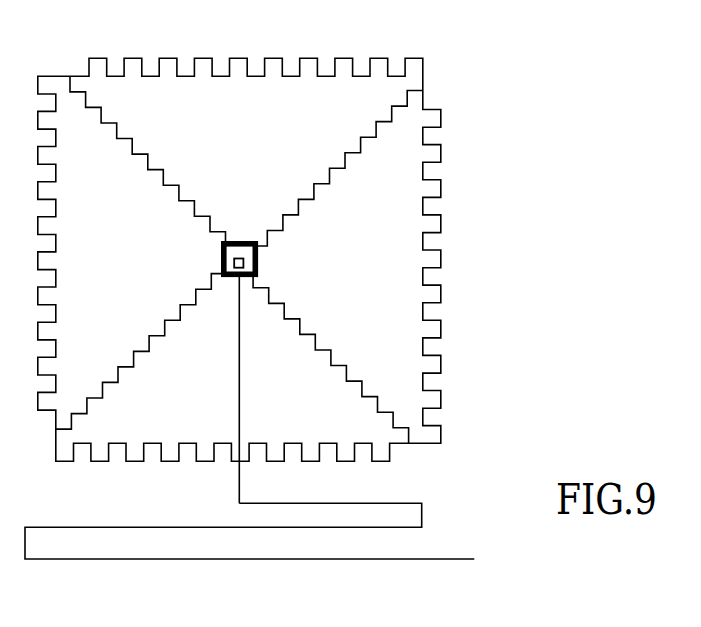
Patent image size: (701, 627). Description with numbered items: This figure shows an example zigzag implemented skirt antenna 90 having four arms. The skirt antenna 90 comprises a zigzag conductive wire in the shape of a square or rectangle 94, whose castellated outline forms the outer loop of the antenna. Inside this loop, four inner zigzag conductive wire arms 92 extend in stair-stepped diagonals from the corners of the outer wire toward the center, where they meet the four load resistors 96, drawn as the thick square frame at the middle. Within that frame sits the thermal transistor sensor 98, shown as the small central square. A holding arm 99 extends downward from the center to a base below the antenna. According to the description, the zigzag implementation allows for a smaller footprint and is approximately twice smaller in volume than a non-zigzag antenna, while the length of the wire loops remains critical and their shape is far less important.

The skirt antenna 90 is at (505, 58).
The inner zigzag conductive wire arms 92 is at (340, 167).
The zigzag conductive wire in the shape of a square or rectangle 94 is at (310, 58).
The load resistors 96 is at (258, 256).
The thermal transistor sensor 98 is at (238, 258).
The holding arm 99 is at (240, 343).